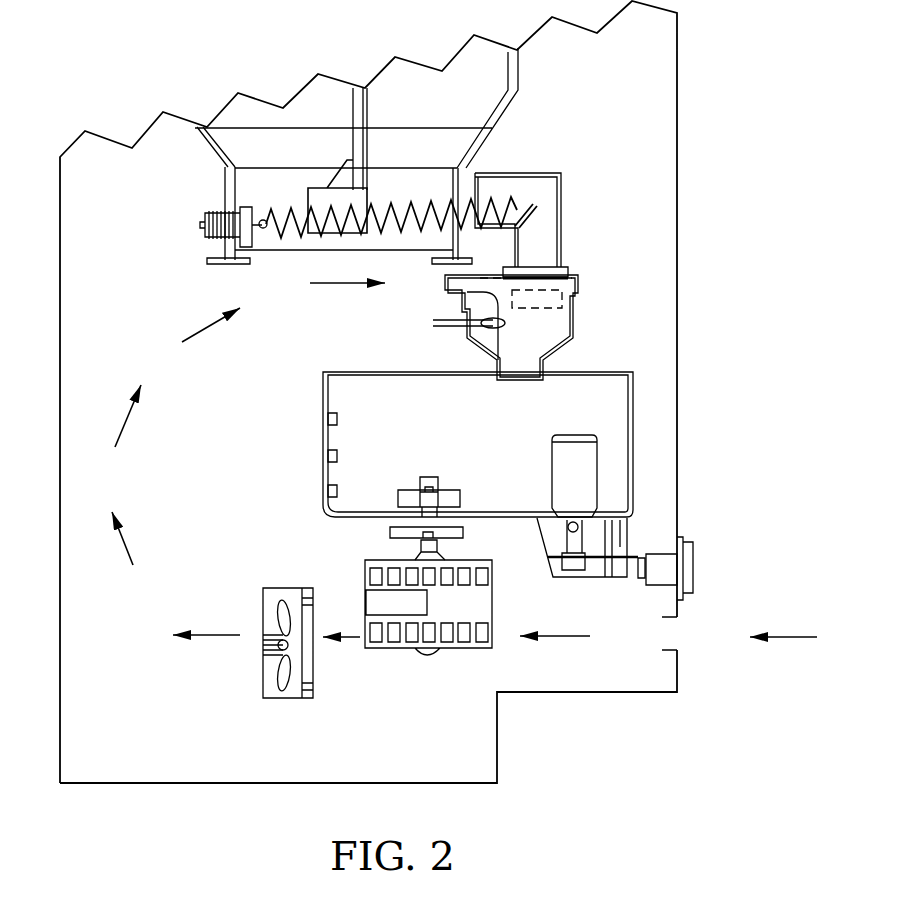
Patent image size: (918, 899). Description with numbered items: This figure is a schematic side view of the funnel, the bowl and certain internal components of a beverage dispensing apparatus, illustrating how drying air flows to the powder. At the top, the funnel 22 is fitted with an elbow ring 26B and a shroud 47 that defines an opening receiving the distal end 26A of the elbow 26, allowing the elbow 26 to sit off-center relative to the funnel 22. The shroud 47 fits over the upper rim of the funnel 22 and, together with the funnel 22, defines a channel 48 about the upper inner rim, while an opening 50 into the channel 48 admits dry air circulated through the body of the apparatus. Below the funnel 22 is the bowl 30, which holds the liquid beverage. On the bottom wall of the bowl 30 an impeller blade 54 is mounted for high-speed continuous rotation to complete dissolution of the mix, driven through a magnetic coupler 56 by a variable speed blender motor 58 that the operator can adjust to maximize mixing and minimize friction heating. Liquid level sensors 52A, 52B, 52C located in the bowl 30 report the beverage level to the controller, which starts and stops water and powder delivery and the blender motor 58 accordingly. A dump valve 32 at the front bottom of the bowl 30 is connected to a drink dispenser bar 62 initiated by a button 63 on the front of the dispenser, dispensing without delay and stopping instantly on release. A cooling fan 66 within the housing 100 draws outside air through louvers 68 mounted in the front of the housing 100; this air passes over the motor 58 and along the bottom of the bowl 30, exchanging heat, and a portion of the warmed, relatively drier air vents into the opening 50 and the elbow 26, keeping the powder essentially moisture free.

The housing 100 is at (550, 693).
The funnel 22 is at (465, 340).
The elbow 26 is at (560, 167).
The distal end of elbow 26A is at (545, 300).
The elbow ring 26B is at (570, 267).
The bowl 30 is at (640, 410).
The dump valve 32 is at (552, 477).
The shroud 47 is at (580, 288).
The channel 48 is at (577, 277).
The opening 50 is at (445, 282).
The low liquid level sensor 52A is at (322, 412).
The blender motor liquid level sensor 52B is at (322, 453).
The liquid level sensor 52C is at (322, 497).
The impeller blade 54 is at (417, 490).
The magnetic coupler 56 is at (370, 543).
The variable speed blender motor 58 is at (427, 658).
The drink dispenser bar 62 is at (637, 550).
The button 63 is at (697, 578).
The cooling fan 66 is at (262, 677).
The louvers 68 is at (670, 633).